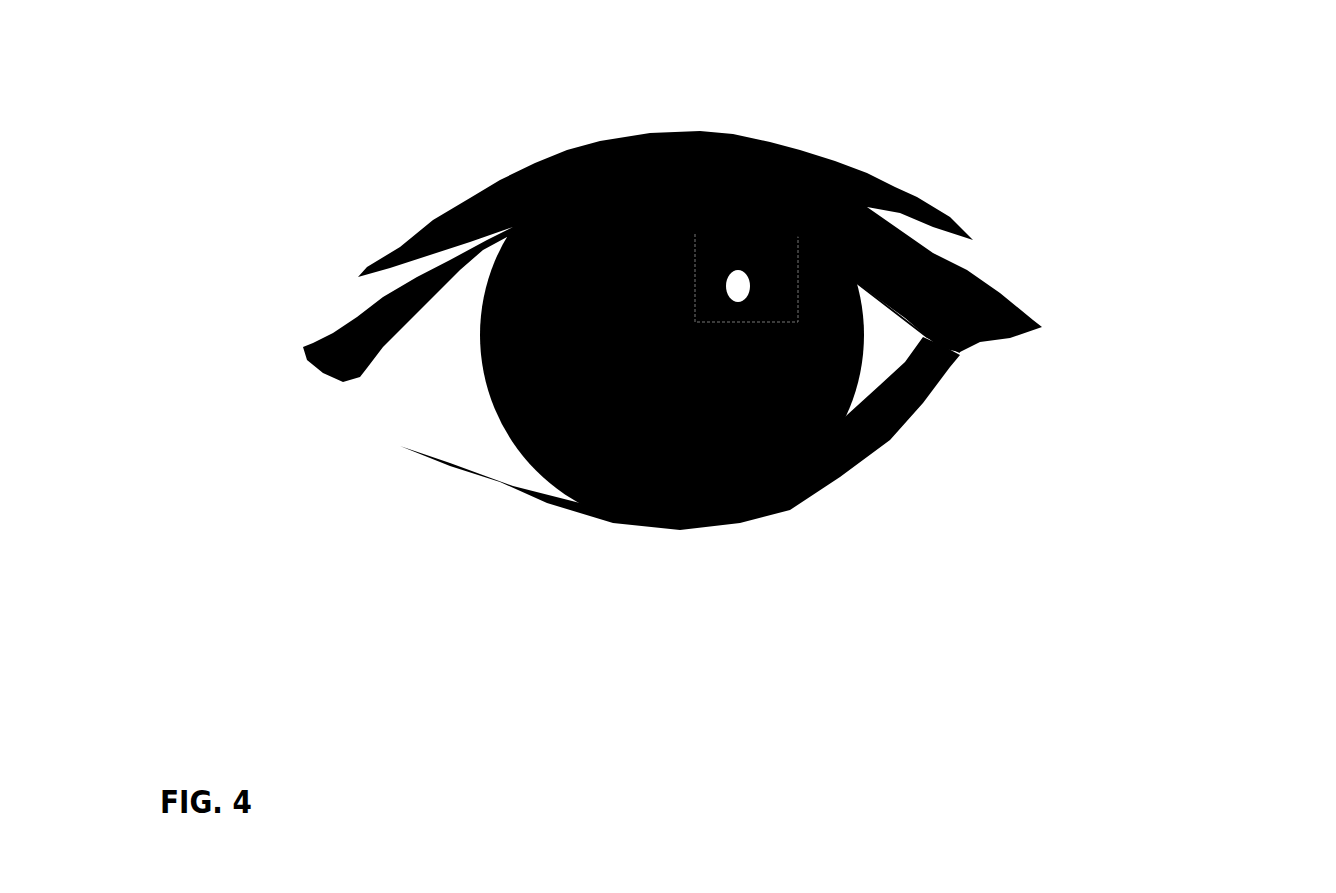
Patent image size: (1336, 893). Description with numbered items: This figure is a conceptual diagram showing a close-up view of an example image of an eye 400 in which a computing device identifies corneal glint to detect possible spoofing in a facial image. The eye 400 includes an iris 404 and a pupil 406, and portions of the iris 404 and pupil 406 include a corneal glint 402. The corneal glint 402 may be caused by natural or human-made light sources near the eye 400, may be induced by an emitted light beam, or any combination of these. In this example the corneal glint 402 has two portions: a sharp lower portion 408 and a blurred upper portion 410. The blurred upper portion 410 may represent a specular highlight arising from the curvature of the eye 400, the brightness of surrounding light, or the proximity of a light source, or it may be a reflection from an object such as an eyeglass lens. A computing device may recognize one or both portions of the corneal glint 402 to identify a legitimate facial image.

The eye 400 is at (403, 98).
The corneal glint 402 is at (953, 277).
The iris 404 is at (657, 480).
The pupil 406 is at (552, 510).
The sharp lower portion 408 is at (780, 343).
The blurred upper portion 410 is at (758, 270).